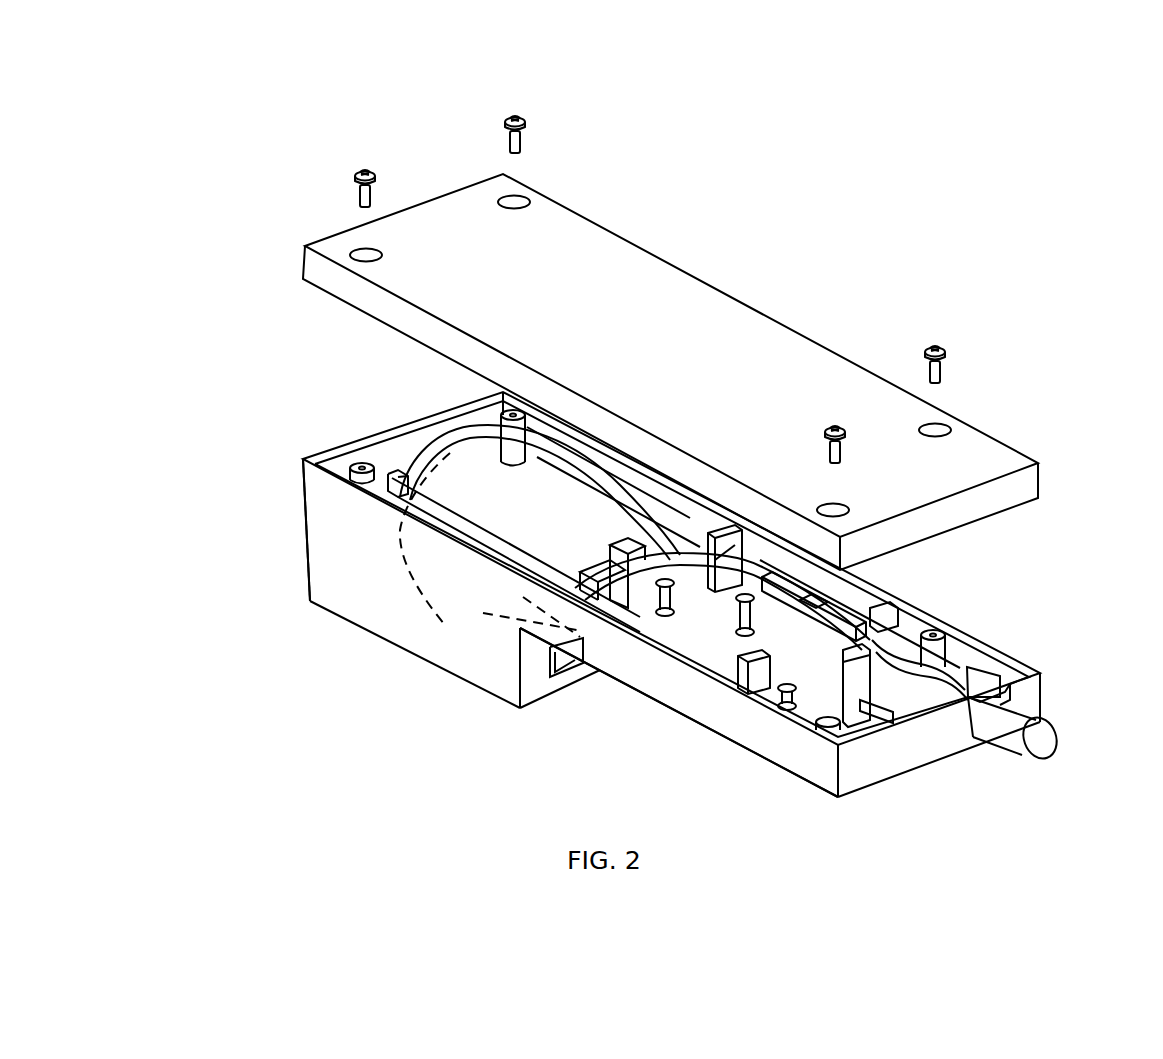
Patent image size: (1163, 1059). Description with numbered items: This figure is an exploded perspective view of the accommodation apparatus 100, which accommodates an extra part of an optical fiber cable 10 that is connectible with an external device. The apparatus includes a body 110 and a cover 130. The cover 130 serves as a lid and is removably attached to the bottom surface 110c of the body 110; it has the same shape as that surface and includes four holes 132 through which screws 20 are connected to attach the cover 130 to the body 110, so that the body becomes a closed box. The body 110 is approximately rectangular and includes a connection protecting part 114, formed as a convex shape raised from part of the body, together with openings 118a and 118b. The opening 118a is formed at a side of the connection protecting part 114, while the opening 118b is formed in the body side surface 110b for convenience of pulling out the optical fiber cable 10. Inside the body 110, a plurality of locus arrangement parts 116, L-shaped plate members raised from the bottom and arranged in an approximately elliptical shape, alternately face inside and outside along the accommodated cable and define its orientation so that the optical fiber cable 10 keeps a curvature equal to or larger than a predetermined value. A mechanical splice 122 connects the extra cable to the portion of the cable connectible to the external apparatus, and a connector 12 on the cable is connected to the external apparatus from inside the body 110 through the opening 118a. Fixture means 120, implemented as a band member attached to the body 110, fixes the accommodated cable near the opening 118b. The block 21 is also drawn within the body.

The accommodation apparatus 100 is at (262, 65).
The screws 20 is at (527, 127).
The cover 130 is at (695, 311).
The holes 132 is at (945, 426).
The body 110 is at (397, 537).
The body side surface 110b is at (813, 760).
The bottom surface 110c is at (483, 467).
The connection protecting part 114 is at (390, 629).
The connector 12 is at (480, 652).
The opening 118a is at (520, 707).
The opening 118b is at (975, 742).
The locus arrangement parts 116 is at (608, 560).
The mounting block 21 is at (712, 590).
The mechanical splice 122 is at (880, 598).
The fixture means 120 is at (982, 669).
The optical fiber cable 10 is at (1036, 720).